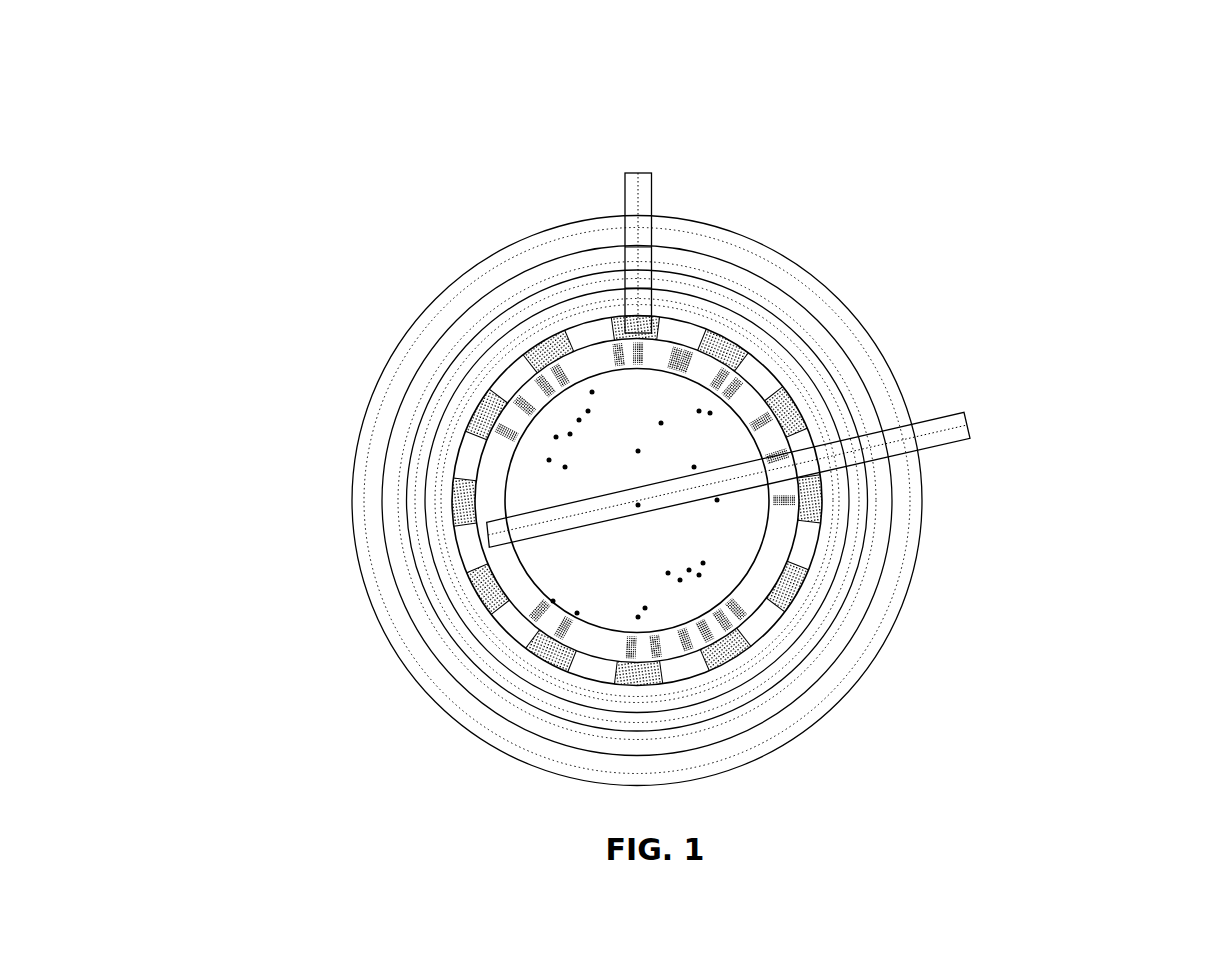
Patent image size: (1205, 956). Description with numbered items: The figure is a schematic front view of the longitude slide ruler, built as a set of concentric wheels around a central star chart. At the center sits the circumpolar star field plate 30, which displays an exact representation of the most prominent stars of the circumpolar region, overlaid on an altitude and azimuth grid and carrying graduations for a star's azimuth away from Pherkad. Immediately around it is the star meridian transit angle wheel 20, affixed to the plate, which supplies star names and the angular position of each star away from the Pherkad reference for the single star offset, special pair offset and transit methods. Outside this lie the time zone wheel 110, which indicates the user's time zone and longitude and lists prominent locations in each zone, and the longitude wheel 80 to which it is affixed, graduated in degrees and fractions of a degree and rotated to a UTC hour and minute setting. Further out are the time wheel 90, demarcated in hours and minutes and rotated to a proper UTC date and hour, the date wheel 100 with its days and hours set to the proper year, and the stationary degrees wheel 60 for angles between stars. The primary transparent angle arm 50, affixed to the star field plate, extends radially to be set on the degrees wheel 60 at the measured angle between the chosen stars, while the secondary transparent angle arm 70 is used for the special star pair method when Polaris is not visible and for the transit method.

The star meridian transit angle wheel 20 is at (496, 559).
The circumpolar star field plate 30 is at (568, 562).
The primary transparent angle arm 50 is at (660, 172).
The degrees wheel 60 is at (820, 273).
The secondary transparent angle arm 70 is at (986, 404).
The longitude wheel 80 is at (448, 407).
The time wheel 90 is at (481, 331).
The date wheel 100 is at (838, 338).
The time zone wheel 110 is at (448, 497).